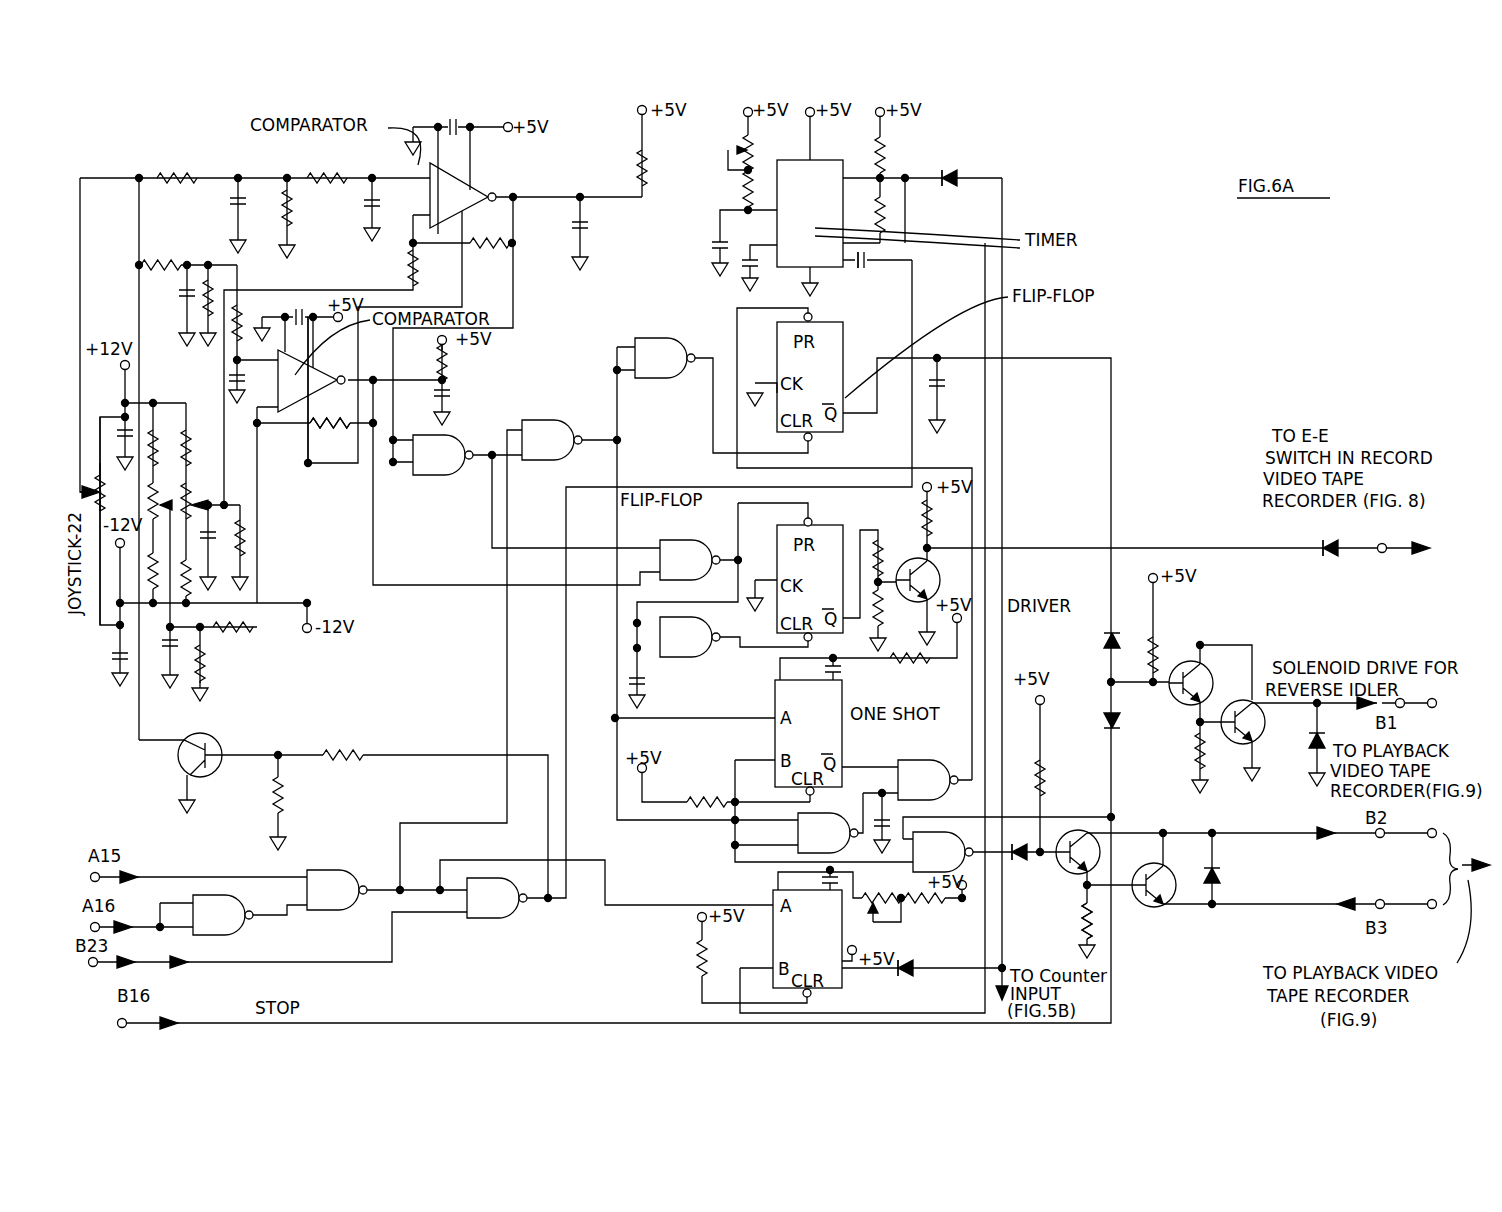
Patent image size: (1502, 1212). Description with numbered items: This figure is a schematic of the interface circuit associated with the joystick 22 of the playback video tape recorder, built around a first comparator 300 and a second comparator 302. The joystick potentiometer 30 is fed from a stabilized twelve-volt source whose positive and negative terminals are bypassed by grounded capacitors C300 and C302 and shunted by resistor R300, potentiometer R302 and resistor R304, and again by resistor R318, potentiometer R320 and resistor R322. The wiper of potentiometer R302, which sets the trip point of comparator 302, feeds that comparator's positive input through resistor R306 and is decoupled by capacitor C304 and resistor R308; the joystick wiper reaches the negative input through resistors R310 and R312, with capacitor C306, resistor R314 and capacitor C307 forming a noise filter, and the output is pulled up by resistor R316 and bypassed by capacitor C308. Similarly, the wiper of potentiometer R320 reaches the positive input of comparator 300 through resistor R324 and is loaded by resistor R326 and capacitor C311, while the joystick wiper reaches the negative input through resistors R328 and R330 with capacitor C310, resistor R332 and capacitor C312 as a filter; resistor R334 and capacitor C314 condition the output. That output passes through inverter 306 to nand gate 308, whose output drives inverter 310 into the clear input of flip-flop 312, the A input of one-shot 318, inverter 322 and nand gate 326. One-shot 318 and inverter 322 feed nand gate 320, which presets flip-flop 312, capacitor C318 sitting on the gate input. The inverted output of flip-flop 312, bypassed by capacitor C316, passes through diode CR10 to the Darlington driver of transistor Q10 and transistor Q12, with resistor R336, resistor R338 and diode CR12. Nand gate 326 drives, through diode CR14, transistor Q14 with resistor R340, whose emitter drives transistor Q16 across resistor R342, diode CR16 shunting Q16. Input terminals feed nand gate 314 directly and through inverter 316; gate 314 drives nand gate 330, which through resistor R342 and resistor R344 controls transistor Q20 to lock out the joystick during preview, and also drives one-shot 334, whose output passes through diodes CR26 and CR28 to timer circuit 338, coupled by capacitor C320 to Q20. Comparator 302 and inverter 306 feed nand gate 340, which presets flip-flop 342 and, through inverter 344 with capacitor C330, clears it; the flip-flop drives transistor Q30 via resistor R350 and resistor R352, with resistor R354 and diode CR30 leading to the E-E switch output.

The first comparator 300 is at (474, 190).
The second comparator 302 is at (310, 382).
The inverter 306 is at (462, 473).
The nand gate 308 is at (530, 426).
The inverter 310 is at (658, 338).
The flip-flop 312 is at (828, 362).
The nand gate 314 is at (323, 870).
The inverter 316 is at (235, 924).
The one-shot 318 is at (828, 762).
The nand gate 320 is at (948, 748).
The inverter 322 is at (795, 840).
The nand gate 326 is at (968, 860).
The nand gate 330 is at (477, 922).
The one-shot 334 is at (830, 923).
The timer circuit 338 is at (912, 218).
The nand gate 340 is at (688, 542).
The flip-flop 342 is at (819, 529).
The inverter 344 is at (705, 644).
The potentiometer 30 is at (114, 490).
The joystick 22 is at (82, 521).
The resistor R328 is at (199, 152).
The resistor R330 is at (350, 152).
The capacitor C311 is at (230, 200).
The resistor R332 is at (312, 208).
The capacitor C312 is at (367, 210).
The resistor R334 is at (638, 168).
The capacitor C314 is at (588, 227).
The resistor R324 is at (382, 268).
The resistor R310 is at (185, 240).
The capacitor C306 is at (180, 292).
The resistor R314 is at (212, 296).
The resistor R312 is at (240, 323).
The capacitor C307 is at (232, 378).
The resistor R316 is at (446, 366).
The capacitor C308 is at (448, 394).
The capacitor C300 is at (120, 430).
The resistor R300 is at (153, 435).
The resistor R318 is at (195, 445).
The potentiometer R302 is at (190, 478).
The potentiometer R320 is at (195, 500).
The capacitor C310 is at (218, 531).
The resistor R326 is at (243, 520).
The resistor R304 is at (95, 558).
The capacitor C302 is at (117, 672).
The capacitor C304 is at (168, 672).
The resistor R322 is at (240, 627).
The resistor R306 is at (217, 647).
The resistor R308 is at (210, 670).
The NPN transistor Q20 is at (208, 742).
The resistor R342 is at (350, 752).
The resistor R344 is at (286, 788).
The capacitor C316 is at (942, 381).
The capacitor C320 is at (858, 266).
The diode CR28 is at (948, 170).
The capacitor C330 is at (644, 672).
The resistor R350 is at (895, 550).
The resistor R354 is at (935, 518).
The NPN transistor Q30 is at (935, 600).
The resistor R352 is at (854, 660).
The capacitor C318 is at (880, 822).
The diode CR14 is at (1027, 856).
The resistor R340 is at (1046, 772).
The diode CR16 is at (1104, 718).
The diode CR10 is at (1104, 640).
The resistor R336 is at (1183, 642).
The NPN transistor Q10 is at (1184, 702).
The NPN transistor Q12 is at (1262, 735).
The resistor R338 is at (1193, 750).
The diode CR12 is at (1312, 744).
The diode CR30 is at (1325, 557).
The NPN transistor Q14 is at (1090, 845).
The NPN transistor Q16 is at (1170, 904).
The diode CR26 is at (903, 964).